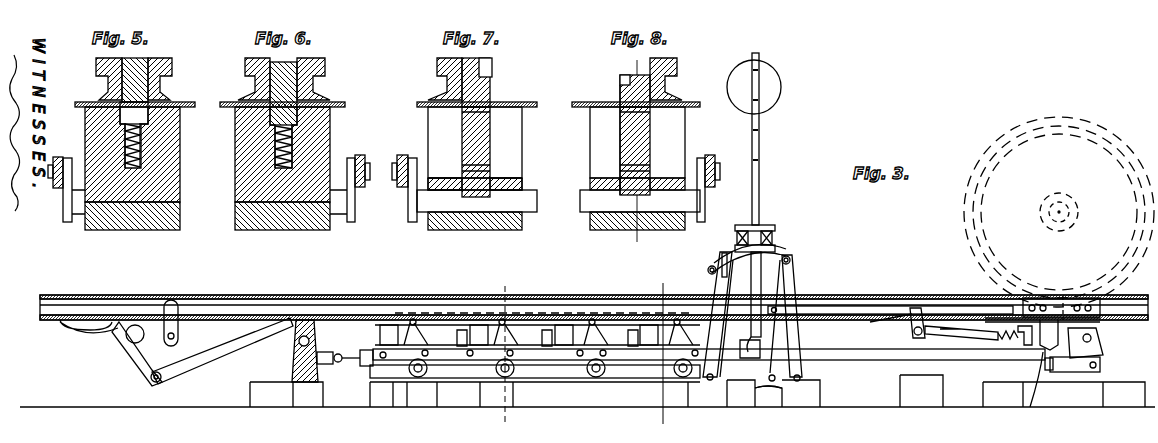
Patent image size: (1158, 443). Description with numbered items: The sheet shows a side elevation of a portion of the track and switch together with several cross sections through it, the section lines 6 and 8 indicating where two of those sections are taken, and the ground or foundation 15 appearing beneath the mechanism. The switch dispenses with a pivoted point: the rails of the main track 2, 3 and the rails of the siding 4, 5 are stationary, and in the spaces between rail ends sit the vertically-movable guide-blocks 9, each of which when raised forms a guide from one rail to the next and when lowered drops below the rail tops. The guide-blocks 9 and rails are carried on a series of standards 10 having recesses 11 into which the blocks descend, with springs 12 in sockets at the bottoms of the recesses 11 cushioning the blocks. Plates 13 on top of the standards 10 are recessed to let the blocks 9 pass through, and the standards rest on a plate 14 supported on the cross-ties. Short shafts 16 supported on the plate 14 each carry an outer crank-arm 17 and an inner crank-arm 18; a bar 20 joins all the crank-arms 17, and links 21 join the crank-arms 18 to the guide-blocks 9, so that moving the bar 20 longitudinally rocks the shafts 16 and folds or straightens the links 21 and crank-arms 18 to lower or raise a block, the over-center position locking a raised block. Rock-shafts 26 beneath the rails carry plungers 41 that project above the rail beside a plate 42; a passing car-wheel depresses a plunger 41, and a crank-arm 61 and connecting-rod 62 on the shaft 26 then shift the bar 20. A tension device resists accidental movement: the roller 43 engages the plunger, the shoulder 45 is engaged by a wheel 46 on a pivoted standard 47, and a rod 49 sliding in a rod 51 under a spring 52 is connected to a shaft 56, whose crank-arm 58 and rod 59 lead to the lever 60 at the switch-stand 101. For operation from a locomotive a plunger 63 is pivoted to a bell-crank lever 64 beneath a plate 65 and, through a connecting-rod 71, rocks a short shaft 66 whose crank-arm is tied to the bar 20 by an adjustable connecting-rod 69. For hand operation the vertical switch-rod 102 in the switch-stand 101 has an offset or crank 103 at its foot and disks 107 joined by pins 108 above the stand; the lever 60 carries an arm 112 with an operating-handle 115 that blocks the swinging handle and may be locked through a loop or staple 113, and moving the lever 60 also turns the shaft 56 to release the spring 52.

In FIG. 5, the rail of the main track 2 is at (171, 68).
In FIG. 6, the rail of the main track 3 is at (318, 64).
In FIG. 8, the rail of the main track 3 is at (679, 66).
In FIG. 3, the rail of the main track 3 is at (367, 298).
In FIG. 5, the rail of the siding 4 is at (97, 66).
In FIG. 7, the rail of the siding 4 is at (440, 64).
In FIG. 6, the rail of the siding 5 is at (250, 61).
In FIG. 3, the section line 6 is at (662, 350).
In FIG. 3, the section line 8 is at (504, 355).
In FIG. 5, the guide-block 9 is at (140, 58).
In FIG. 6, the guide-block 9 is at (288, 81).
In FIG. 7, the guide-block 9 is at (476, 62).
In FIG. 8, the guide-block 9 is at (625, 89).
In FIG. 3, the guide-block 9 is at (463, 345).
In FIG. 5, the standard 10 is at (175, 156).
In FIG. 6, the standard 10 is at (240, 154).
In FIG. 7, the standard 10 is at (600, 128).
In FIG. 8, the standard 10 is at (637, 149).
In FIG. 3, the standard 10 is at (537, 335).
In FIG. 5, the recess 11 is at (146, 113).
In FIG. 5, the spring 12 is at (124, 138).
In FIG. 6, the spring 12 is at (296, 140).
In FIG. 5, the plate 13 is at (187, 104).
In FIG. 6, the plate 13 is at (229, 104).
In FIG. 7, the plate 13 is at (525, 104).
In FIG. 8, the plate 13 is at (590, 106).
In FIG. 3, the plate 13 is at (573, 312).
In FIG. 5, the plate 14 is at (172, 230).
In FIG. 6, the plate 14 is at (237, 230).
In FIG. 7, the plate 14 is at (593, 230).
In FIG. 8, the plate 14 is at (637, 221).
In FIG. 3, the foundation block 15 is at (250, 396).
In FIG. 5, the short shaft 16 is at (66, 222).
In FIG. 6, the short shaft 16 is at (350, 222).
In FIG. 7, the short shaft 16 is at (600, 201).
In FIG. 8, the short shaft 16 is at (640, 201).
In FIG. 3, the short shaft 16 is at (403, 378).
In FIG. 5, the crank-arm 17 is at (60, 222).
In FIG. 6, the crank-arm 17 is at (355, 190).
In FIG. 7, the crank-arm 17 is at (412, 190).
In FIG. 8, the crank-arm 17 is at (704, 191).
In FIG. 3, the crank-arm 17 is at (428, 372).
In FIG. 7, the crank-arm 18 is at (620, 173).
In FIG. 8, the crank-arm 18 is at (637, 184).
In FIG. 5, the bar 20 is at (57, 188).
In FIG. 6, the bar 20 is at (361, 161).
In FIG. 7, the bar 20 is at (402, 160).
In FIG. 8, the bar 20 is at (708, 157).
In FIG. 3, the bar 20 is at (560, 360).
In FIG. 7, the link 21 is at (462, 131).
In FIG. 8, the link 21 is at (622, 141).
In FIG. 3, the link 21 is at (428, 336).
In FIG. 3, the short shaft 26 is at (1104, 339).
In FIG. 3, the plunger 41 is at (1140, 248).
In FIG. 3, the plate 42 is at (1100, 310).
In FIG. 3, the roller 43 is at (1021, 318).
In FIG. 3, the shoulder 45 is at (1040, 375).
In FIG. 3, the wheel 46 is at (1016, 318).
In FIG. 3, the pivoted standard 47 is at (1035, 347).
In FIG. 3, the rod 49 is at (1028, 337).
In FIG. 3, the rod 51 is at (972, 331).
In FIG. 3, the spring 52 is at (1003, 338).
In FIG. 3, the shaft 56 is at (912, 334).
In FIG. 3, the crank-arm 58 is at (907, 329).
In FIG. 3, the rod 59 is at (834, 307).
In FIG. 3, the lever 60 is at (752, 390).
In FIG. 3, the crank-arm 61 is at (1100, 356).
In FIG. 3, the connecting-rod 62 is at (905, 361).
In FIG. 3, the plunger 63 is at (178, 314).
In FIG. 3, the bell-crank lever 64 is at (140, 357).
In FIG. 3, the plate 65 is at (205, 320).
In FIG. 3, the short shaft 66 is at (320, 341).
In FIG. 3, the adjustable connecting-rod 69 is at (350, 359).
In FIG. 3, the connecting-rod 71 is at (222, 358).
In FIG. 3, the switch-stand 101 is at (722, 283).
In FIG. 3, the switch-rod 102 is at (756, 320).
In FIG. 3, the offset or crank 103 is at (743, 354).
In FIG. 3, the disks or plates 107 is at (772, 227).
In FIG. 3, the pin 108 is at (776, 238).
In FIG. 3, the arm 112 is at (738, 262).
In FIG. 3, the loop or staple 113 is at (708, 266).
In FIG. 3, the operating-handle 115 is at (790, 261).